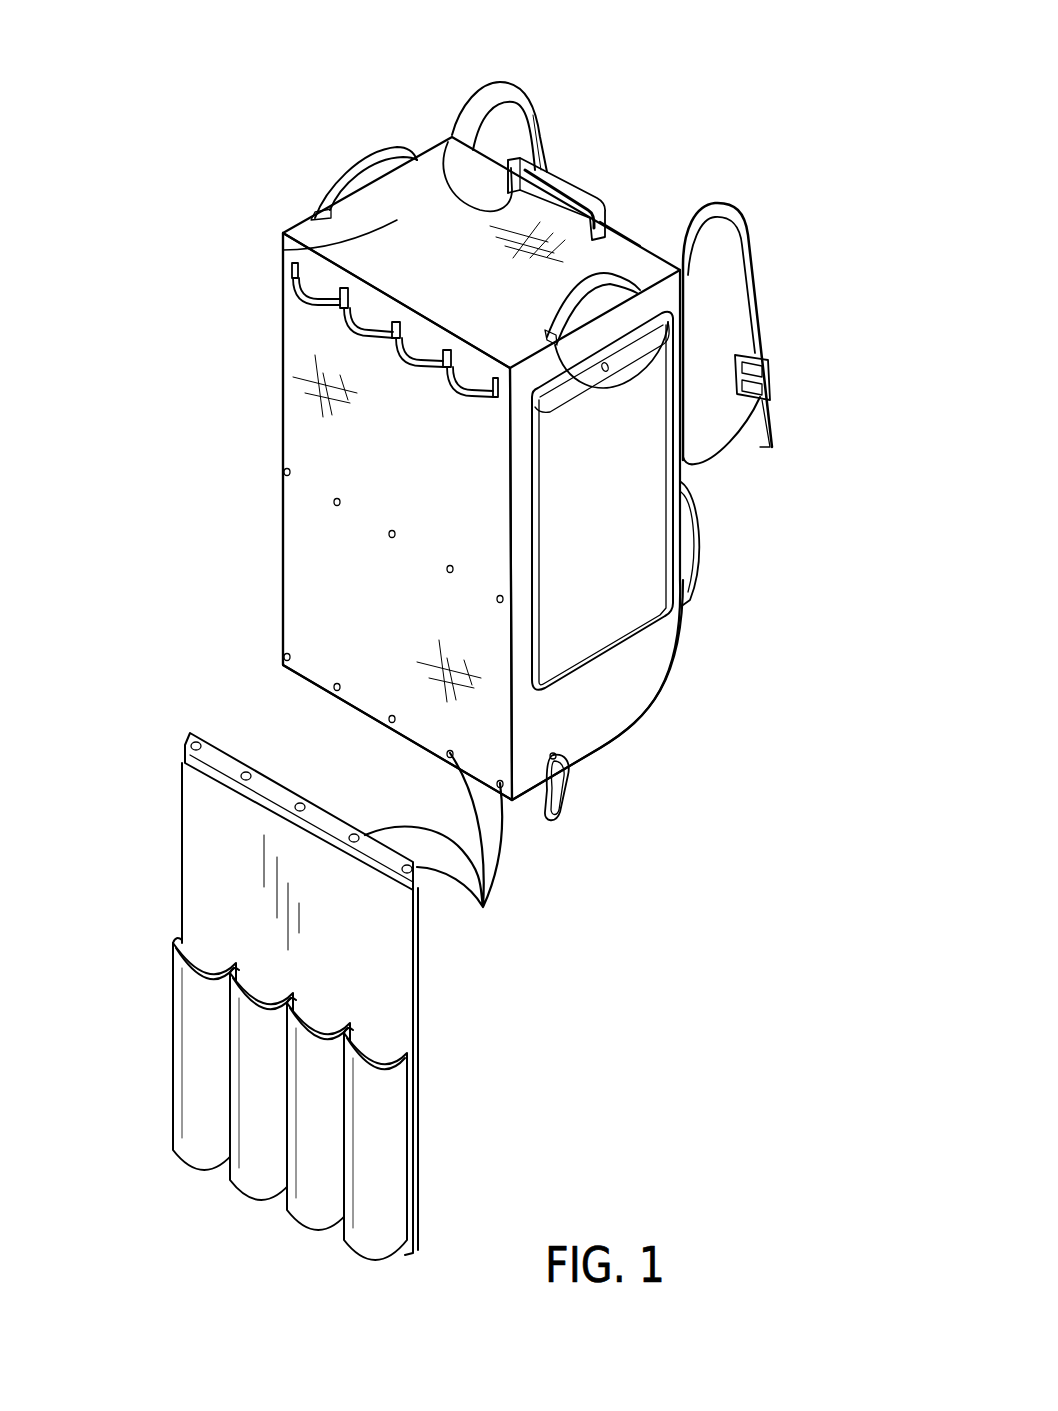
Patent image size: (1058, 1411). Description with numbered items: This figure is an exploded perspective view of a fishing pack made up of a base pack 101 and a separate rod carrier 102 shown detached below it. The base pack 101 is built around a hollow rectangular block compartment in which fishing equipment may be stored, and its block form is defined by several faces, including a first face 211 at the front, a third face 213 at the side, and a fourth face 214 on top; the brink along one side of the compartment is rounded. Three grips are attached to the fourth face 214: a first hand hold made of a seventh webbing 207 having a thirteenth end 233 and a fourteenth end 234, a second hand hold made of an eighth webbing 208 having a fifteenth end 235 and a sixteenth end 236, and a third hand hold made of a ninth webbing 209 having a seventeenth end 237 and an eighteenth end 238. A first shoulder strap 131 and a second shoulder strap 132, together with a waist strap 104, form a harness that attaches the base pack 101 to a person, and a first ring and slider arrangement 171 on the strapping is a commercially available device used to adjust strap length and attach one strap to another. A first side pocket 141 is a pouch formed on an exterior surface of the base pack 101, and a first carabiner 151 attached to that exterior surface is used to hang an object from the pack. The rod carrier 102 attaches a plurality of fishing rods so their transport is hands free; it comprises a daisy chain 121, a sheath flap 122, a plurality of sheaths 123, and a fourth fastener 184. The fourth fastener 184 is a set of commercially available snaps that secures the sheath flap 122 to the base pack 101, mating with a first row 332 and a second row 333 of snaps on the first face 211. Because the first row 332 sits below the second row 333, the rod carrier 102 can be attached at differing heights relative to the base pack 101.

The base pack 101 is at (283, 358).
The rod carrier 102 is at (422, 1020).
The waist strap 104 is at (703, 553).
The daisy chain 121 is at (353, 322).
The sheath flap 122 is at (222, 840).
The plurality of sheaths 123 is at (380, 1157).
The first shoulder strap 131 is at (700, 213).
The second shoulder strap 132 is at (488, 97).
The first side pocket 141 is at (625, 587).
The first carabiner 151 is at (567, 818).
The first ring and slider arrangement 171 is at (772, 382).
The fourth fastener 184 is at (443, 856).
The seventh webbing 207 is at (667, 313).
The eighth webbing 208 is at (360, 163).
The ninth webbing 209 is at (563, 177).
The first face 211 is at (320, 548).
The third face 213 is at (612, 705).
The fourth face 214 is at (283, 250).
The thirteenth end 233 is at (583, 390).
The fourteenth end 234 is at (637, 288).
The fifteenth end 235 is at (311, 219).
The sixteenth end 236 is at (412, 153).
The seventeenth end 237 is at (438, 144).
The eighteenth end 238 is at (630, 235).
The first row 332 is at (257, 611).
The second row 333 is at (257, 441).